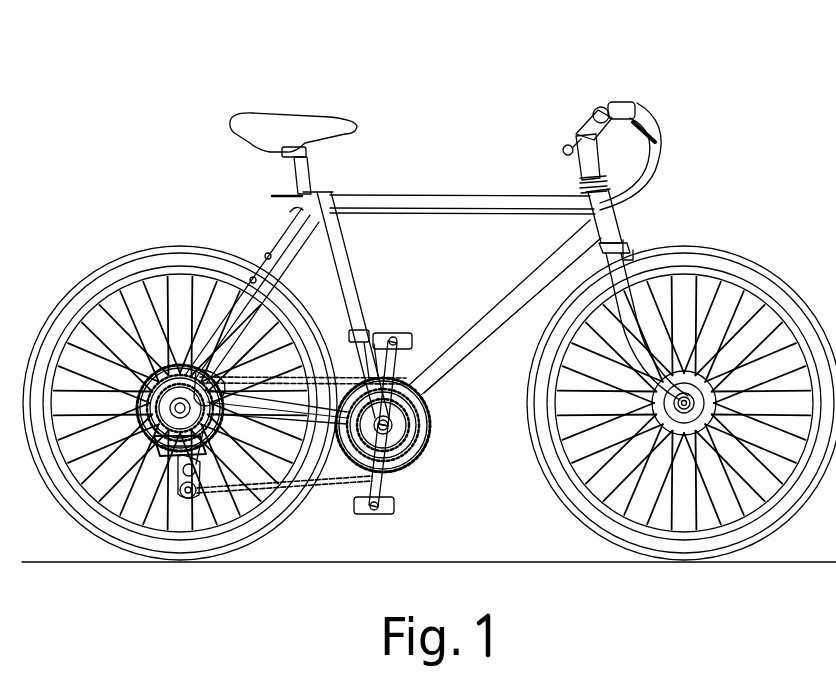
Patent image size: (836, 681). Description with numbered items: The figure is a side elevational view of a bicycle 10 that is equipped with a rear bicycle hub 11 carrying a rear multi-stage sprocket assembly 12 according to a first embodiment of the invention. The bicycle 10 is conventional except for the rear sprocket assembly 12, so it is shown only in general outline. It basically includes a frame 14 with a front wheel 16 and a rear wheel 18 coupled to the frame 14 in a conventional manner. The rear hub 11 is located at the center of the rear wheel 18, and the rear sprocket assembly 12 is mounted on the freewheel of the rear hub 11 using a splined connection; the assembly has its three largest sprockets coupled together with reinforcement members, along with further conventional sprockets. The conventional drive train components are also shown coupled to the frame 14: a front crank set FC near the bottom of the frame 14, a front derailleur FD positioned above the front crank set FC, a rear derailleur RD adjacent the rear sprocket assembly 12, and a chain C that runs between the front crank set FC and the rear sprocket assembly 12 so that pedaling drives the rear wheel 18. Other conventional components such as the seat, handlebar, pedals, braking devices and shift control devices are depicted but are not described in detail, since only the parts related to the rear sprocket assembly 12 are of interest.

The bicycle 10 is at (429, 285).
The rear bicycle hub 11 is at (182, 333).
The rear multi-stage sprocket assembly 12 is at (148, 358).
The frame 14 is at (420, 205).
The front wheel 16 is at (717, 253).
The rear wheel 18 is at (218, 245).
The front derailleur FD is at (357, 337).
The front crank set FC is at (427, 452).
The chain C is at (337, 478).
The rear derailleur RD is at (153, 443).